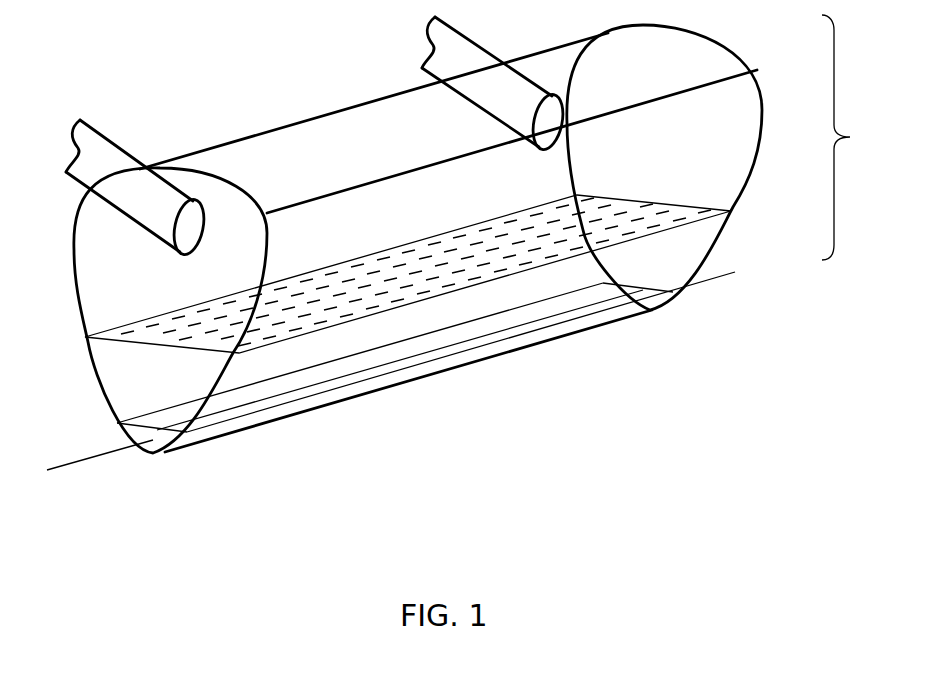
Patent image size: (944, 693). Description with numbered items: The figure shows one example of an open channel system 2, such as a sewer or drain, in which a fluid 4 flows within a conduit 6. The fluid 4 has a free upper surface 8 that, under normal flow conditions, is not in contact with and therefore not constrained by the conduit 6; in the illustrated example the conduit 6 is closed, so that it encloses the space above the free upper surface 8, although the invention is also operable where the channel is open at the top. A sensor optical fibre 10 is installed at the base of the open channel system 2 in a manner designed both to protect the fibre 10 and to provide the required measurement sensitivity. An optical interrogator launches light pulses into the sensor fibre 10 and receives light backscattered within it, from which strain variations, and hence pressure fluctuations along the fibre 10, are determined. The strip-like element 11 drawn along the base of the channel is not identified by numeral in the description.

The open channel system 2 is at (850, 137).
The fluid 4 is at (125, 363).
The conduit 6 is at (750, 173).
The free upper surface 8 is at (393, 277).
The sensor optical fibre 10 is at (67, 465).
The strip / channel 11 is at (382, 357).